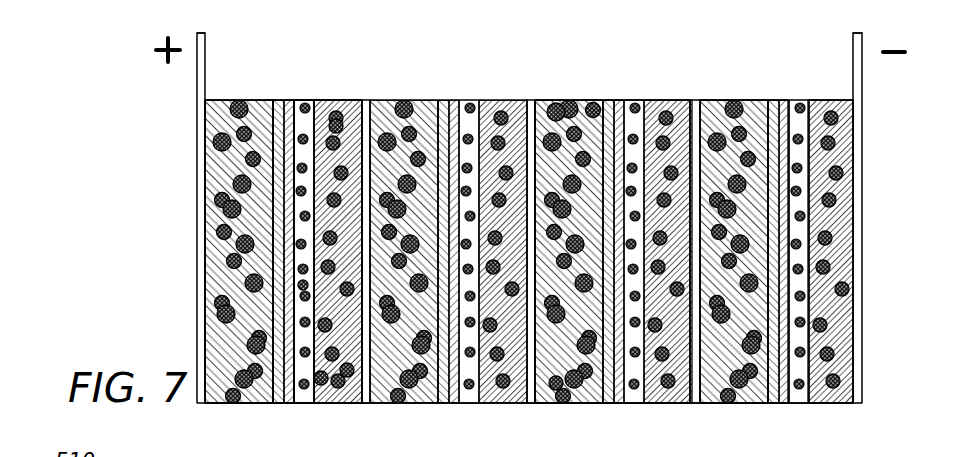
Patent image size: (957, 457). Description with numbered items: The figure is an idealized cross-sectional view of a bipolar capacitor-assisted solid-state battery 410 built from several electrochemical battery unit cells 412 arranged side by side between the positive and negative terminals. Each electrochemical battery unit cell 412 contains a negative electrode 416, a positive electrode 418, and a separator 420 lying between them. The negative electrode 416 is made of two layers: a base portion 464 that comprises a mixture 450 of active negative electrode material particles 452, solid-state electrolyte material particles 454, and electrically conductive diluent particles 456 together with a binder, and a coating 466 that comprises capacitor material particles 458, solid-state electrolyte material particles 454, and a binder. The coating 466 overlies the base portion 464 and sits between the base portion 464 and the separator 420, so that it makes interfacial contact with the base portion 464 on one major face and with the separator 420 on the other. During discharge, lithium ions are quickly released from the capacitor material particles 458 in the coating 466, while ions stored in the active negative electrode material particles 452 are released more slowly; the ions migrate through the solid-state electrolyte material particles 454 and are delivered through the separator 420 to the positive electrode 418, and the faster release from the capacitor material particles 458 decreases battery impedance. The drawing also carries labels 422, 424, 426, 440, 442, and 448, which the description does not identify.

The bipolar capacitor-assisted solid-state battery 410 is at (142, 99).
The electrochemical battery unit cell 412 is at (205, 405).
The negative electrode 416 is at (818, 95).
The positive electrode 418 is at (240, 100).
The separator 420 is at (277, 100).
The inter-cell separator 422 is at (366, 100).
The positive terminal / casing 424 is at (201, 34).
The negative terminal / casing 426 is at (857, 33).
The electrode layer 440 is at (576, 99).
The active material particle 442 is at (556, 102).
The active material particle 448 is at (594, 102).
The mixture 450 is at (343, 176).
The active negative electrode material particles 452 is at (340, 124).
The solid-state electrolyte material particles 454 is at (298, 284).
The electrically conductive diluent particles 456 is at (349, 377).
The capacitor material particles 458 is at (307, 183).
The base portion 464 is at (314, 100).
The coating 466 is at (294, 100).